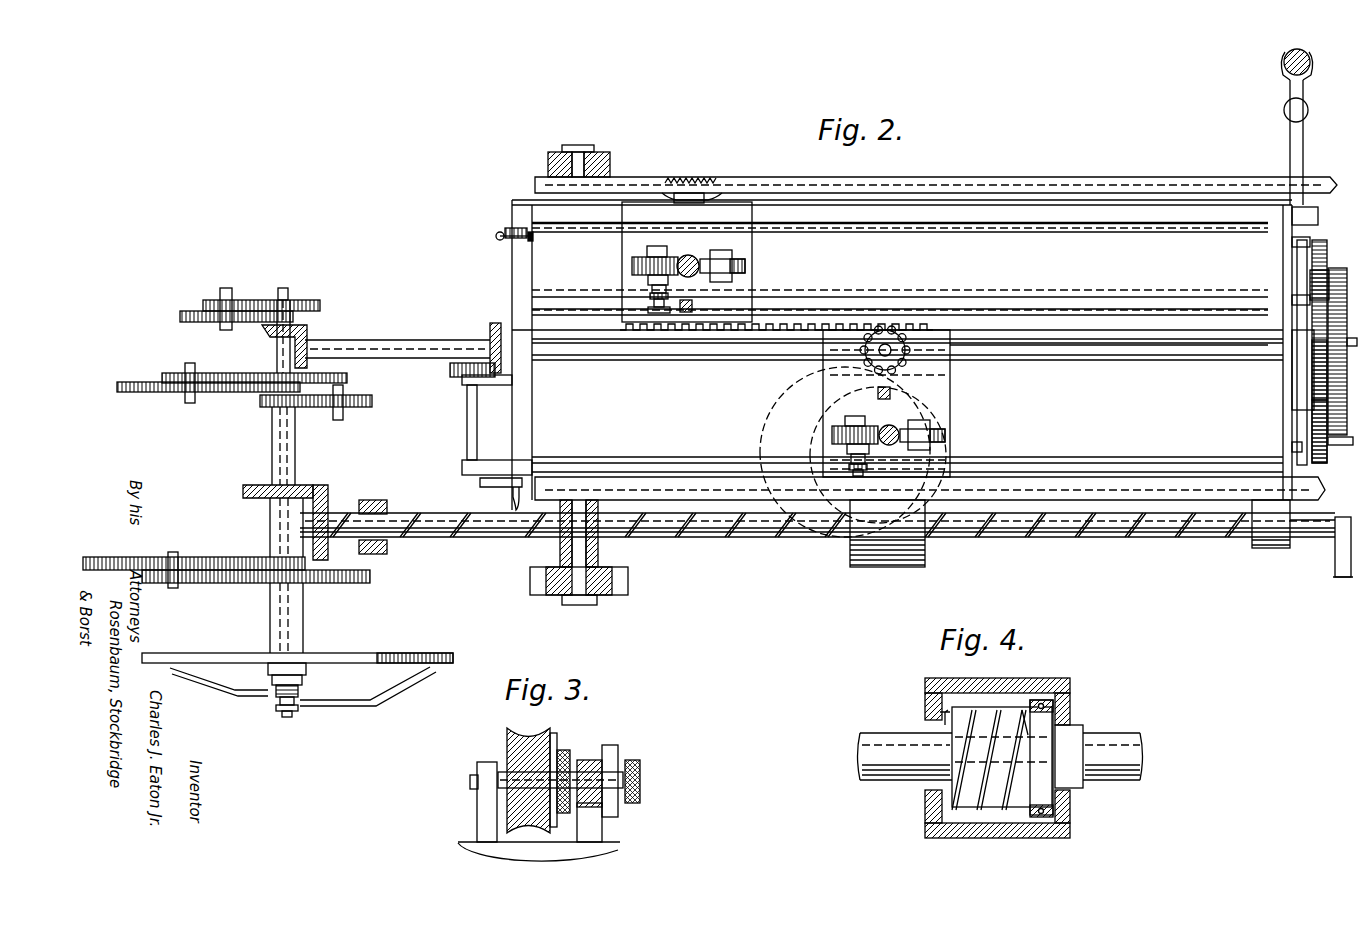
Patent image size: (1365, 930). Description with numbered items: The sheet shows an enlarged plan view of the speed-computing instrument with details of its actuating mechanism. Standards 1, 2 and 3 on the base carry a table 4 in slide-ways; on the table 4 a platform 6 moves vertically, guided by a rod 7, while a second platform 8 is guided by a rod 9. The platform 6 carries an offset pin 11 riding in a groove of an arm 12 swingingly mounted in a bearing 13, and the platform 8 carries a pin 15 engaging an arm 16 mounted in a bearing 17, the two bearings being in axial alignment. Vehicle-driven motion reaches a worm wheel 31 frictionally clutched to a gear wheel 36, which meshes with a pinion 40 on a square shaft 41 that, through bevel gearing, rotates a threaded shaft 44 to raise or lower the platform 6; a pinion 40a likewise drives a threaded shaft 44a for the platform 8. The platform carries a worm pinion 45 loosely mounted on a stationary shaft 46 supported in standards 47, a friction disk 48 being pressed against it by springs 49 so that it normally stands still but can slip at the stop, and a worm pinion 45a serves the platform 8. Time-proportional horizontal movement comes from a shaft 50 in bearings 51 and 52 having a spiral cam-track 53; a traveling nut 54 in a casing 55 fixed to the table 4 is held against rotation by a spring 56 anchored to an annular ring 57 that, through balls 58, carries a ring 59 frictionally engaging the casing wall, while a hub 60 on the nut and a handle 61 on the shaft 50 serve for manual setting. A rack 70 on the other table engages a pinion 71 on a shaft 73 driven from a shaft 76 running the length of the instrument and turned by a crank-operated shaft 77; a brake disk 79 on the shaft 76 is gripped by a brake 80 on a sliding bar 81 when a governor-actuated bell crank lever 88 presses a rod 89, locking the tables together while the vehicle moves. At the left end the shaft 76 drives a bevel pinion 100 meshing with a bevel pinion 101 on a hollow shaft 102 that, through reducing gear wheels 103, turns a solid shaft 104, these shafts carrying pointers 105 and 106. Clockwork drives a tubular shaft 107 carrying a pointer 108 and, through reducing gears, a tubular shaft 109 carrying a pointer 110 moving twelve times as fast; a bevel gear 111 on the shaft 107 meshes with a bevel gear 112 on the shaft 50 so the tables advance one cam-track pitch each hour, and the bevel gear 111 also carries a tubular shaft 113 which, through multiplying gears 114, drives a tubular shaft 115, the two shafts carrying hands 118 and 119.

In FIG. 2, the standard 1 is at (1100, 464).
In FIG. 2, the standard 2 is at (1090, 333).
In FIG. 2, the standard 3 is at (1172, 232).
In FIG. 2, the table 4 is at (950, 366).
In FIG. 2, the platform 6 is at (950, 418).
In FIG. 3, the platform 6 is at (575, 852).
In FIG. 2, the rod 7 is at (892, 395).
In FIG. 2, the platform 8 is at (752, 254).
In FIG. 2, the rod 9 is at (686, 313).
In FIG. 2, the offset pin 11 is at (884, 486).
In FIG. 2, the arm 12 is at (715, 488).
In FIG. 2, the bearing 13 is at (612, 582).
In FIG. 2, the pin 15 is at (690, 180).
In FIG. 2, the arm 16 is at (1078, 192).
In FIG. 2, the bearing 17 is at (610, 156).
In FIG. 2, the worm wheel 31 is at (1336, 268).
In FIG. 2, the gear wheel 36 is at (1312, 383).
In FIG. 2, the pinion 40 is at (1312, 416).
In FIG. 2, the pinion 40a is at (1310, 280).
In FIG. 2, the shaft 41 is at (1298, 455).
In FIG. 2, the threaded shaft 44 is at (886, 426).
In FIG. 2, the threaded shaft 44a is at (690, 258).
In FIG. 2, the worm pinion 45 is at (832, 435).
In FIG. 3, the worm pinion 45 is at (507, 742).
In FIG. 2, the worm pinion 45a is at (632, 265).
In FIG. 3, the shaft 46 is at (580, 772).
In FIG. 3, the standards 47 is at (477, 820).
In FIG. 3, the friction disk 48 is at (553, 735).
In FIG. 3, the springs 49 is at (564, 752).
In FIG. 2, the shaft 50 is at (1110, 537).
In FIG. 4, the shaft 50 is at (888, 732).
In FIG. 2, the bearing 51 is at (1275, 548).
In FIG. 2, the bearing 52 is at (380, 502).
In FIG. 2, the spiral cam-track 53 is at (1038, 537).
In FIG. 4, the traveling nut 54 is at (1053, 714).
In FIG. 2, the casing 55 is at (892, 567).
In FIG. 4, the casing 55 is at (1070, 812).
In FIG. 4, the spring 56 is at (956, 795).
In FIG. 4, the annular ring 57 is at (1038, 700).
In FIG. 4, the balls 58 is at (1030, 712).
In FIG. 4, the annular ring 59 is at (1053, 706).
In FIG. 4, the hub 60 is at (1083, 732).
In FIG. 2, the handle 61 is at (1348, 580).
In FIG. 2, the rack 70 is at (798, 326).
In FIG. 2, the pinion 71 is at (890, 328).
In FIG. 2, the shaft 73 is at (878, 352).
In FIG. 2, the shaft 76 is at (1176, 344).
In FIG. 2, the shaft 77 is at (467, 428).
In FIG. 2, the brake disk 79 is at (1290, 345).
In FIG. 2, the brake 80 is at (1292, 320).
In FIG. 2, the sliding bar 81 is at (1300, 258).
In FIG. 2, the bell crank lever 88 is at (1292, 146).
In FIG. 2, the rod 89 is at (1082, 236).
In FIG. 2, the bevel pinion 100 is at (307, 330).
In FIG. 2, the bevel pinion 101 is at (305, 325).
In FIG. 2, the hollow tubular shaft 102 is at (277, 348).
In FIG. 2, the reducing gear wheels 103 is at (268, 282).
In FIG. 2, the solid shaft 104 is at (288, 300).
In FIG. 2, the pointer 105 is at (368, 708).
In FIG. 2, the pointer 106 is at (372, 702).
In FIG. 2, the tubular shaft 107 is at (272, 455).
In FIG. 2, the pointer 108 is at (278, 708).
In FIG. 2, the tubular shaft 109 is at (296, 692).
In FIG. 2, the pointer 110 is at (245, 690).
In FIG. 2, the bevel gear 111 is at (243, 495).
In FIG. 2, the bevel gear 112 is at (328, 498).
In FIG. 2, the tubular shaft 113 is at (270, 536).
In FIG. 2, the multiplying gears 114 is at (230, 583).
In FIG. 2, the tubular shaft 115 is at (270, 630).
In FIG. 2, the hand 118 is at (322, 658).
In FIG. 2, the hand 119 is at (268, 667).